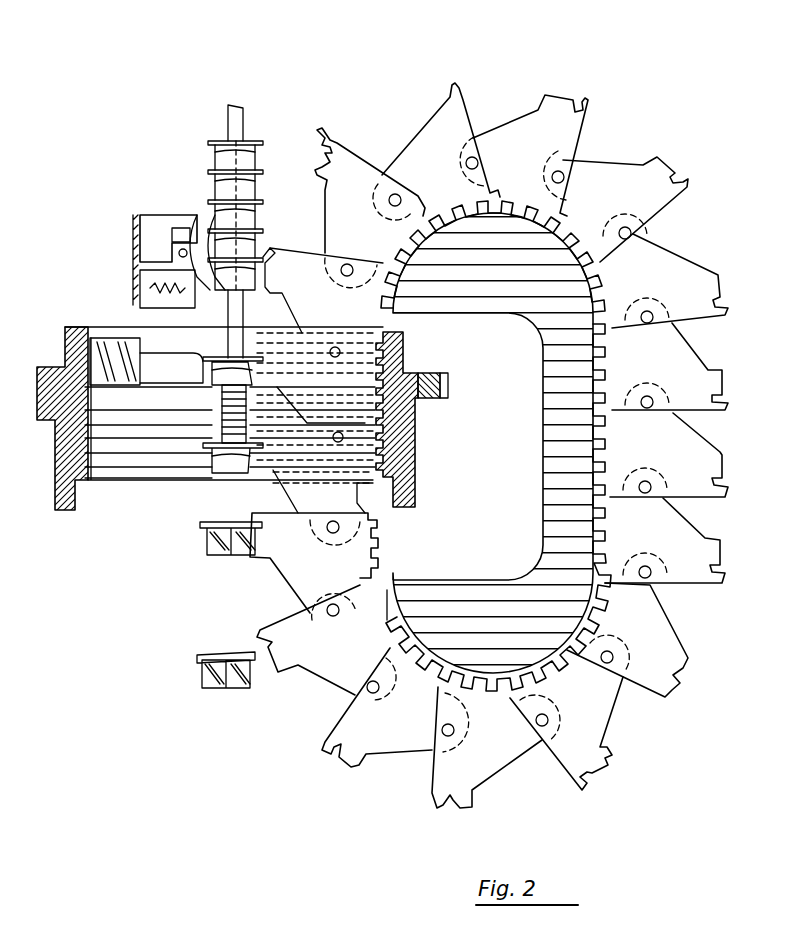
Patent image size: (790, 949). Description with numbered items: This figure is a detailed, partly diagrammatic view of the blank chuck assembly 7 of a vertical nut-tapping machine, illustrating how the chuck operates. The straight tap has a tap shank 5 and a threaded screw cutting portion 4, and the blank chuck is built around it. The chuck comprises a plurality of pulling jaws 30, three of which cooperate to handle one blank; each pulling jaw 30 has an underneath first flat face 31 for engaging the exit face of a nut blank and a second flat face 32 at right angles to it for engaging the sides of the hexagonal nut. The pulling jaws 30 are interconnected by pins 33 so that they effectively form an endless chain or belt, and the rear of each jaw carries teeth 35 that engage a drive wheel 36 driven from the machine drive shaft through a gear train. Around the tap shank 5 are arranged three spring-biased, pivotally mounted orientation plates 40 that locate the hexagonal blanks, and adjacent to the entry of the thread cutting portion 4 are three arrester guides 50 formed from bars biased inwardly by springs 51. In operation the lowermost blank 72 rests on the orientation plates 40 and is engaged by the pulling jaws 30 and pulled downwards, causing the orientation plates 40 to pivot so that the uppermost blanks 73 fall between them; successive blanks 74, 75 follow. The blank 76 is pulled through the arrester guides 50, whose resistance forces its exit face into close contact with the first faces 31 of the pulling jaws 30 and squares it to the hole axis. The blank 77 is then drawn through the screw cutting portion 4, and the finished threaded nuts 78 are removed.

The blank chuck assembly 7 is at (552, 71).
The pulling jaws 30 is at (447, 97).
The first flat face 31 is at (320, 136).
The second flat face 32 is at (455, 88).
The pins 33 is at (300, 610).
The teeth 35 is at (582, 240).
The drive wheel 36 is at (408, 468).
The orientation plates 40 is at (185, 245).
The threaded screw cutting portion 4 is at (228, 410).
The tap shank 5 is at (241, 112).
The arrester guides 50 is at (180, 360).
The springs 51 is at (108, 328).
The lowermost blank 72 is at (270, 248).
The uppermost blanks 73 is at (230, 240).
The blank 74 is at (228, 218).
The blank 75 is at (232, 200).
The blank 76 is at (233, 360).
The blank 77 is at (225, 460).
The threaded nuts 78 is at (202, 545).